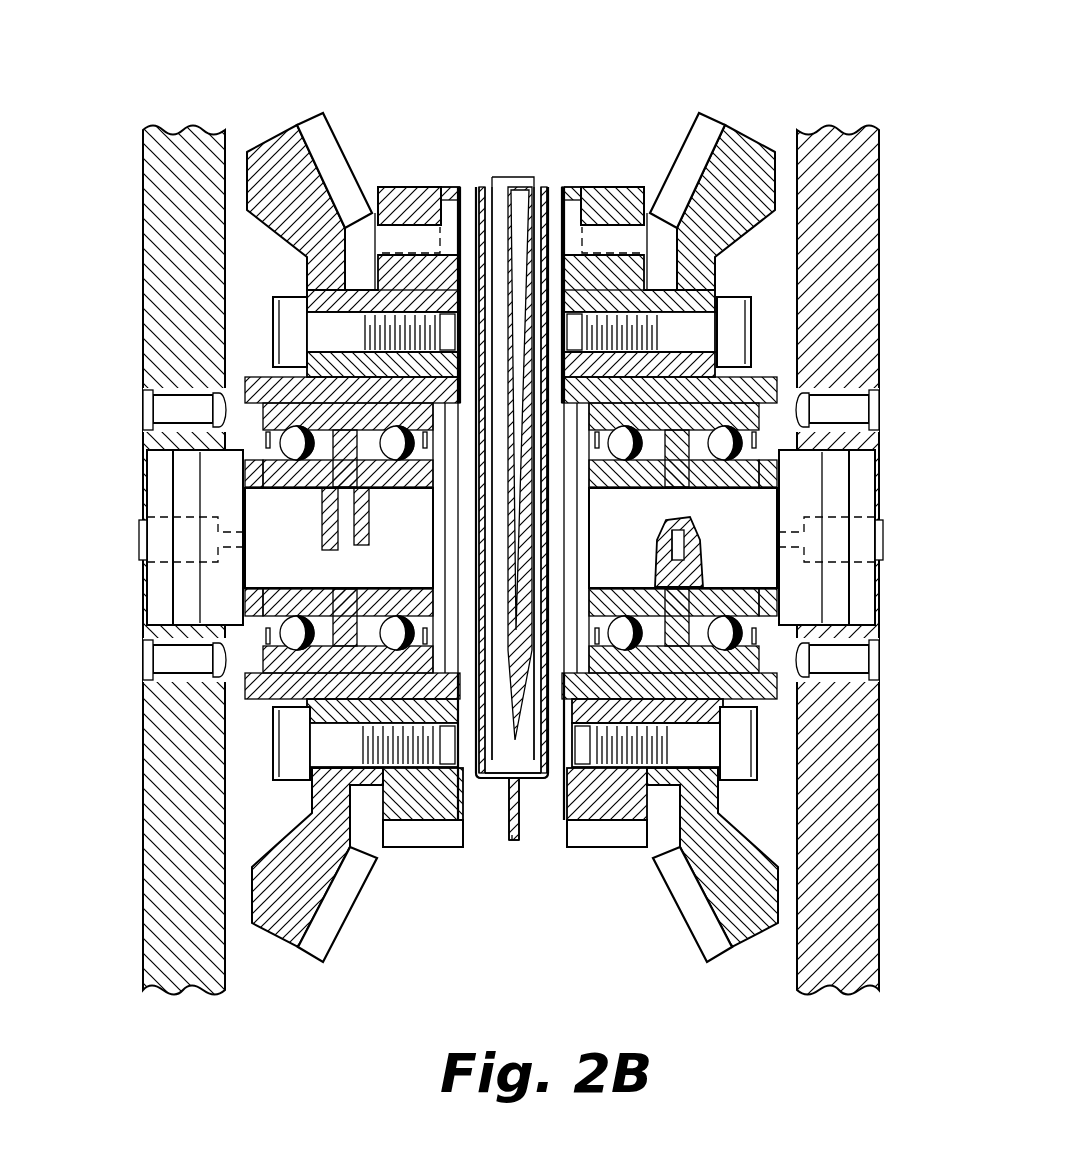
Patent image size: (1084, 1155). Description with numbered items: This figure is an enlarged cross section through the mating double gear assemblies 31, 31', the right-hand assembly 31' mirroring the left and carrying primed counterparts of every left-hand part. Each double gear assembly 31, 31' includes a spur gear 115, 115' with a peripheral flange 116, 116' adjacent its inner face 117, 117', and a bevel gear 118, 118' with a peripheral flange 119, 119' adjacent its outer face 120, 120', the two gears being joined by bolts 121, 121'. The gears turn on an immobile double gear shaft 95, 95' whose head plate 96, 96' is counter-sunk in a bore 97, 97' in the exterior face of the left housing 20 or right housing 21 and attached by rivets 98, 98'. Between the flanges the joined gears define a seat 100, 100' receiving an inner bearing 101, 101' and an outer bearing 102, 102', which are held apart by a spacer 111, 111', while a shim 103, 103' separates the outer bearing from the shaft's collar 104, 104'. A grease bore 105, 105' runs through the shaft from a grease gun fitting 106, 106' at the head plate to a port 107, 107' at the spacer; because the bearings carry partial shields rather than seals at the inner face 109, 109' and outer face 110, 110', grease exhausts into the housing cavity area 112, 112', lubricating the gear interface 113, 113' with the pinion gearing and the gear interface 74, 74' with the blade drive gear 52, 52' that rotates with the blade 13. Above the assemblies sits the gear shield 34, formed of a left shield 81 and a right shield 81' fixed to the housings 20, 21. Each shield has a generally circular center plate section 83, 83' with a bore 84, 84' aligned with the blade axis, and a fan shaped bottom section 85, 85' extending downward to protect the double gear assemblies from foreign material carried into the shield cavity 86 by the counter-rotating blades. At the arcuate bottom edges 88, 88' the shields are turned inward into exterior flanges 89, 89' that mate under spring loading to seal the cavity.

The blade 13 is at (505, 568).
The left housing 20 is at (205, 127).
The right housing 21 is at (845, 125).
The double gear assembly 31 is at (399, 112).
The double gear assembly 31' is at (642, 95).
The gear shield 34 is at (507, 822).
The blade drive gear 52 is at (411, 183).
The blade drive gear 52' is at (611, 182).
The gear interface 74 is at (419, 184).
The gear interface 74' is at (603, 184).
The left shield 81 is at (478, 434).
The right shield 81' is at (576, 422).
The center plate section 83 is at (486, 424).
The center plate section 83' is at (592, 420).
The bore 84 is at (509, 430).
The bore 84' is at (555, 411).
The fan shaped bottom section 85 is at (468, 870).
The fan shaped bottom section 85' is at (559, 867).
The shield cavity 86 is at (530, 760).
The bottom edge 88 is at (433, 807).
The bottom edge 88' is at (603, 807).
The exterior flange 89 is at (497, 905).
The exterior flange 89' is at (529, 908).
The double gear shaft 95 is at (273, 538).
The double gear shaft 95' is at (746, 538).
The head plate 96 is at (128, 537).
The head plate 96' is at (896, 537).
The bore 97 is at (207, 537).
The bore 97' is at (824, 537).
The rivets 98 is at (161, 535).
The rivets 98' is at (863, 535).
The seat 100 is at (345, 726).
The seat 100' is at (756, 557).
The inner bearing 101 is at (348, 494).
The inner bearing 101' is at (674, 483).
The outer bearing 102 is at (346, 554).
The outer bearing 102' is at (674, 550).
The shim 103 is at (309, 538).
The shim 103' is at (684, 538).
The collar 104 is at (168, 537).
The collar 104' is at (858, 537).
The grease bore 105 is at (382, 527).
The grease bore 105' is at (657, 552).
The grease gun fitting 106 is at (206, 539).
The grease gun fitting 106' is at (820, 539).
The port 107 is at (313, 530).
The port 107' is at (642, 552).
The inner face 109 is at (353, 538).
The inner face 109' is at (675, 538).
The outer face 110 is at (278, 715).
The outer face 110' is at (753, 701).
The spacer 111 is at (382, 356).
The spacer 111' is at (642, 539).
The housing cavity area 112 is at (276, 512).
The housing cavity area 112' is at (744, 491).
The gear interface 113 is at (323, 865).
The gear interface 113' is at (706, 865).
The spur gear 115 is at (392, 227).
The spur gear 115' is at (632, 227).
The peripheral flange 116 is at (382, 375).
The peripheral flange 116' is at (639, 375).
The inner face 117 is at (478, 838).
The inner face 117' is at (557, 838).
The bevel gear 118 is at (311, 182).
The bevel gear 118' is at (711, 185).
The peripheral flange 119 is at (271, 344).
The peripheral flange 119' is at (821, 332).
The outer face 120 is at (173, 488).
The outer face 120' is at (847, 607).
The bolts 121 is at (361, 285).
The bolts 121' is at (674, 293).